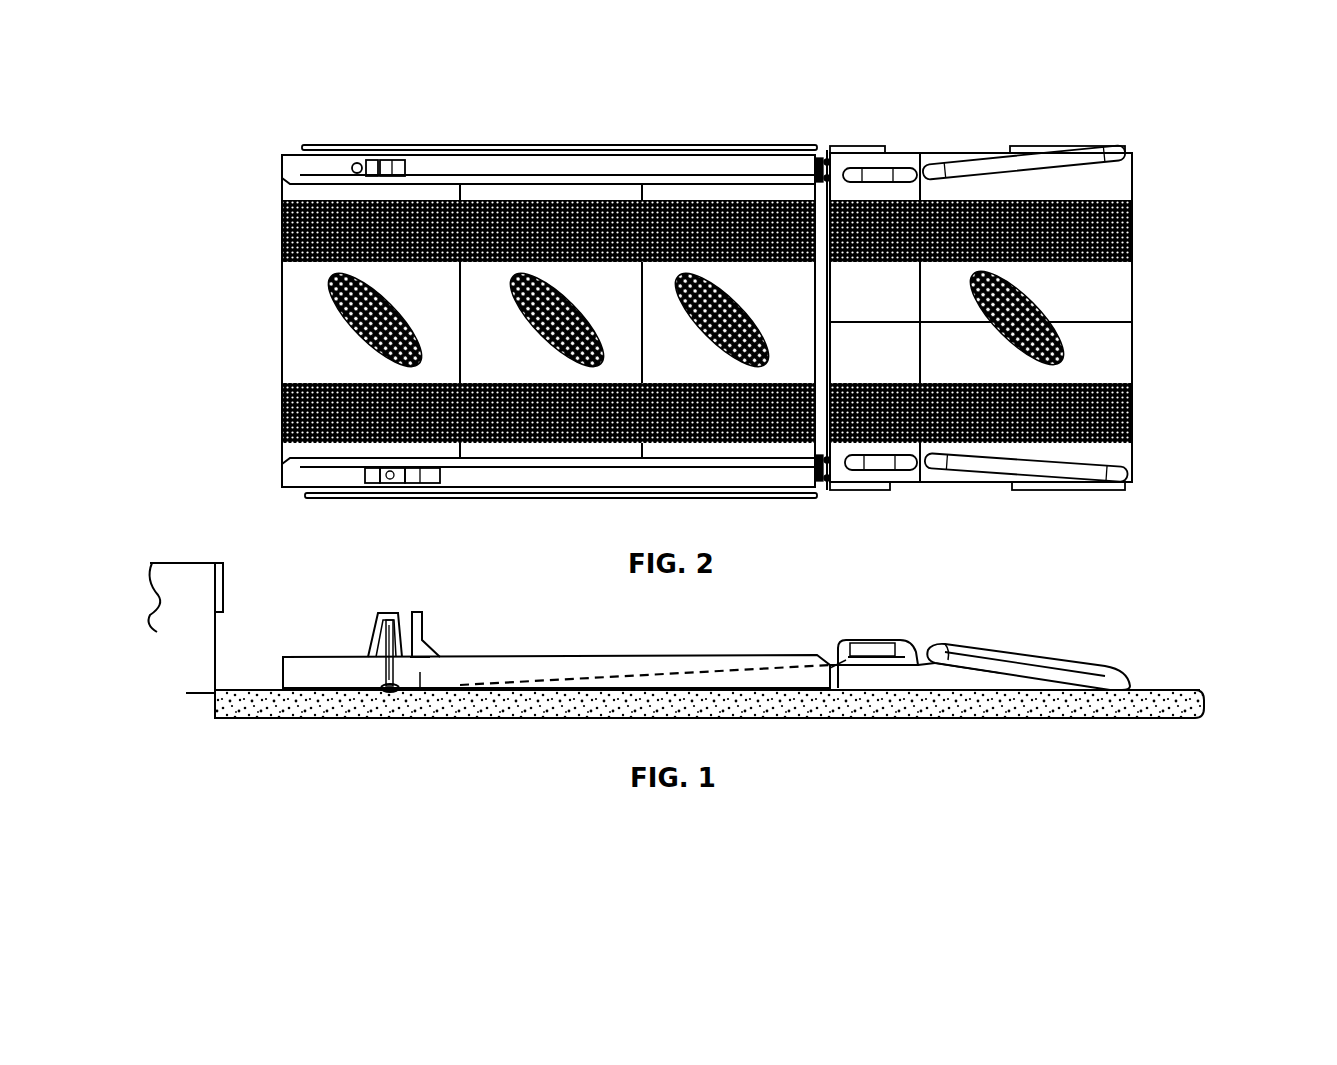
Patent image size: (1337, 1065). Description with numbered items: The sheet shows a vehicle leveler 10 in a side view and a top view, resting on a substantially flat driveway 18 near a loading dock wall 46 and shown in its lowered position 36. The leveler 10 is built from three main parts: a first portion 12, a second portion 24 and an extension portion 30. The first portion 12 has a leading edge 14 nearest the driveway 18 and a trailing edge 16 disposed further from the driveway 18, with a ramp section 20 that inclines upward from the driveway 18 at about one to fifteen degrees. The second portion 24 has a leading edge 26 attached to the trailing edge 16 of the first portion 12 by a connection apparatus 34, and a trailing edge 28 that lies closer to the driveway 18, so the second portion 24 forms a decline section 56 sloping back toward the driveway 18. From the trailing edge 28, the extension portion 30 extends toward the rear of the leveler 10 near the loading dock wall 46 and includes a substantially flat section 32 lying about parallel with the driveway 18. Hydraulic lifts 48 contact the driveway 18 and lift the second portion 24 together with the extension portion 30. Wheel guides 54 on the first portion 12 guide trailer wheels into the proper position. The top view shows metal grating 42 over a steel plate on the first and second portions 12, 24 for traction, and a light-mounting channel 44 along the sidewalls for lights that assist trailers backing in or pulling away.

In FIG. 2, the vehicle leveler 10 is at (747, 116).
In FIG. 1, the vehicle leveler 10 is at (1137, 655).
In FIG. 2, the first portion 12 is at (1085, 340).
In FIG. 1, the first portion 12 is at (968, 672).
In FIG. 1, the leading edge 14 is at (1145, 682).
In FIG. 1, the trailing edge 16 is at (836, 662).
In FIG. 1, the driveway 18 is at (1115, 700).
In FIG. 1, the ramp section 20 is at (1038, 666).
In FIG. 2, the second portion 24 is at (715, 195).
In FIG. 1, the second portion 24 is at (755, 678).
In FIG. 1, the leading edge 26 is at (830, 668).
In FIG. 1, the trailing edge 28 is at (530, 688).
In FIG. 2, the extension portion 30 is at (335, 195).
In FIG. 1, the extension portion 30 is at (420, 705).
In FIG. 1, the substantially flat section 32 is at (340, 698).
In FIG. 1, the connection apparatus 34 is at (920, 660).
In FIG. 1, the lowered position 36 is at (300, 690).
In FIG. 2, the metal grating 42 is at (968, 200).
In FIG. 2, the light-mounting channel 44 is at (455, 152).
In FIG. 1, the loading dock wall 46 is at (193, 605).
In FIG. 1, the hydraulic lifts 48 is at (422, 620).
In FIG. 1, the wheel guides 54 is at (932, 662).
In FIG. 1, the decline section 56 is at (600, 690).